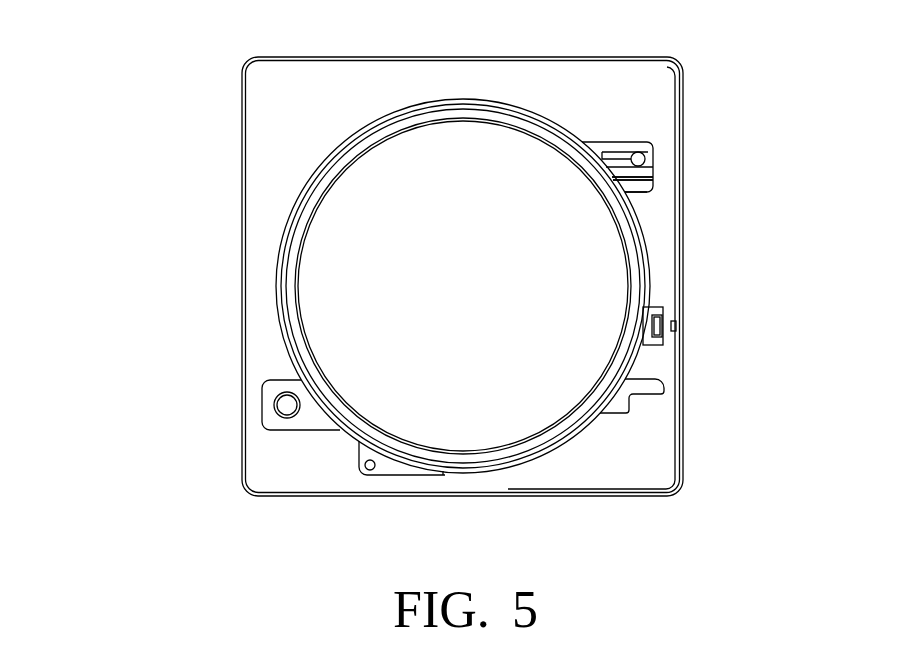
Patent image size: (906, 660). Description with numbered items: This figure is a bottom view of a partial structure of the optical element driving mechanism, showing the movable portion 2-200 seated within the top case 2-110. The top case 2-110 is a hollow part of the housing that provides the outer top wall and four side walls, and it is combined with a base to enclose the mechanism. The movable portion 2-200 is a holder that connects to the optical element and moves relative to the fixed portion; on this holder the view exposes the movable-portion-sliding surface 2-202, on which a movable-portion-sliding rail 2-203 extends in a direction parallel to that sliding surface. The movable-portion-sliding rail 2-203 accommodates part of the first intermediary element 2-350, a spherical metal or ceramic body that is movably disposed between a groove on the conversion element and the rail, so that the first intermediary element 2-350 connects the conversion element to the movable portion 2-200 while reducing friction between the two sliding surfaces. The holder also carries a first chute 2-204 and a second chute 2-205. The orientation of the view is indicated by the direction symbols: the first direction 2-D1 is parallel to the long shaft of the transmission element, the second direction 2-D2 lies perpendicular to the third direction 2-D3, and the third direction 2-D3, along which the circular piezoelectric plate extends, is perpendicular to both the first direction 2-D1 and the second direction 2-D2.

The movable portion 2-200 is at (543, 121).
The top case 2-110 is at (683, 86).
The movable-portion-sliding surface 2-202 is at (640, 144).
The movable-portion-sliding rail 2-203 is at (645, 158).
The first intermediary element 2-350 is at (653, 185).
The first chute 2-204 is at (282, 404).
The second chute 2-205 is at (628, 402).
The first direction 2-D1 is at (135, 530).
The second direction 2-D2 is at (138, 524).
The third direction 2-D3 is at (143, 538).